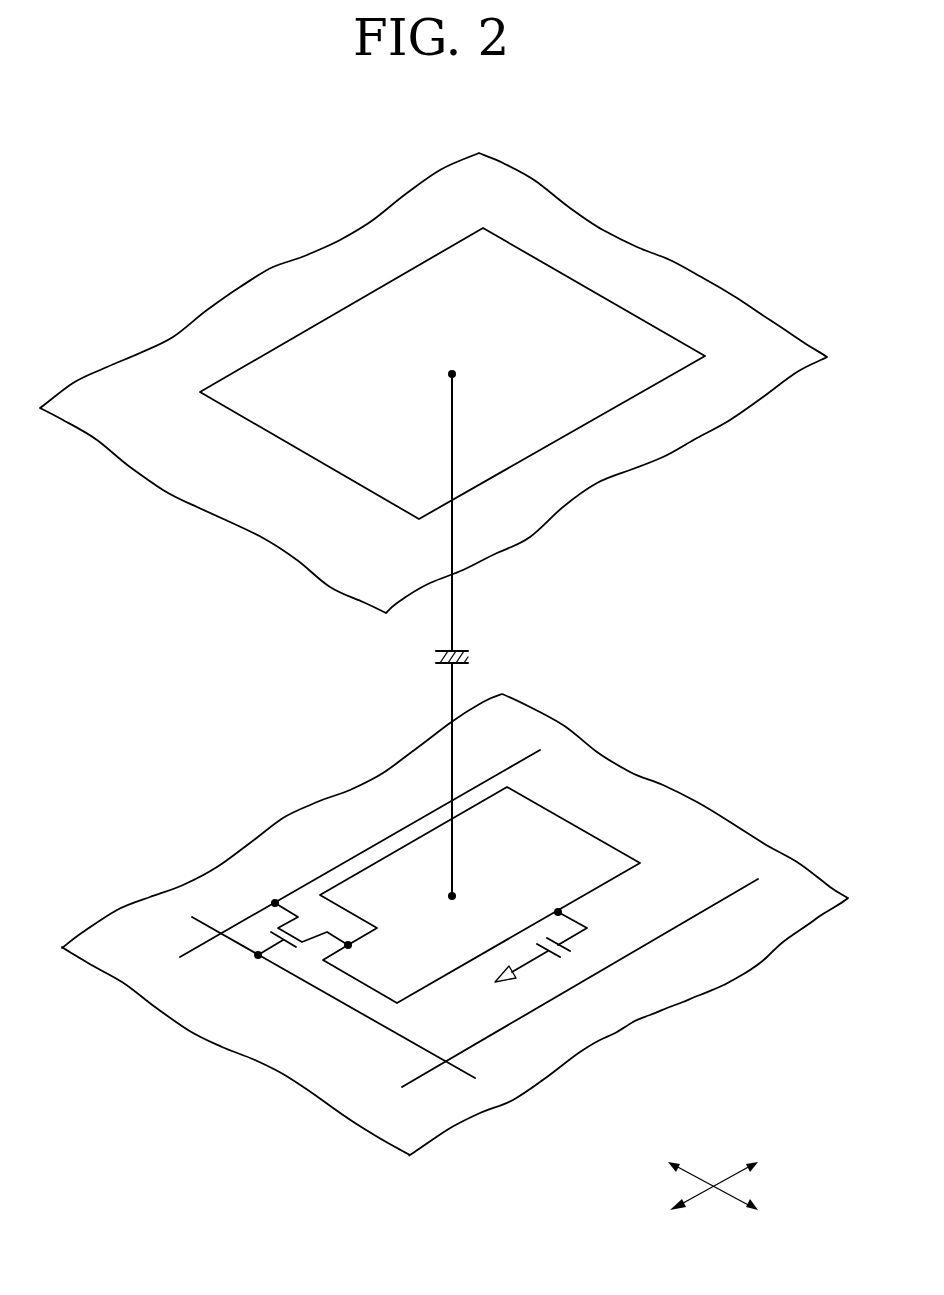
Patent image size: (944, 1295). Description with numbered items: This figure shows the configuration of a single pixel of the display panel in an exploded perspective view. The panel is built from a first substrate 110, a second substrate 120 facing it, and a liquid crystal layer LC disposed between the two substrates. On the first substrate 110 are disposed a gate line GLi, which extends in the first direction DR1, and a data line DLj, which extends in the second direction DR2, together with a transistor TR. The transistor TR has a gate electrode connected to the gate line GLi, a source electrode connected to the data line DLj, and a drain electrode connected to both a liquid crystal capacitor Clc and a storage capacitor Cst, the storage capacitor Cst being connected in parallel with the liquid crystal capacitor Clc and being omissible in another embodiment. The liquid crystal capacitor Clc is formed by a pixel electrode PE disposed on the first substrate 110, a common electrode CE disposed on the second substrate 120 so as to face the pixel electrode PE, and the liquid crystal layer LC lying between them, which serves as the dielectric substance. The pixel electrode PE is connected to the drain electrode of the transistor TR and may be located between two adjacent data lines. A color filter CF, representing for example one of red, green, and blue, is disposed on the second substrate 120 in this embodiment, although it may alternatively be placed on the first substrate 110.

The second substrate 120 is at (518, 545).
The common electrode CE is at (705, 420).
The color filter CF is at (565, 437).
The liquid crystal capacitor Clc is at (471, 658).
The liquid crystal layer LC is at (628, 648).
The first substrate 110 is at (627, 1027).
The pixel electrode PE is at (575, 823).
The gate line GLi is at (312, 993).
The data line DLj is at (338, 861).
The transistor TR is at (291, 954).
The storage capacitor Cst is at (550, 945).
The first direction DR1 is at (737, 1193).
The second direction DR2 is at (738, 1180).